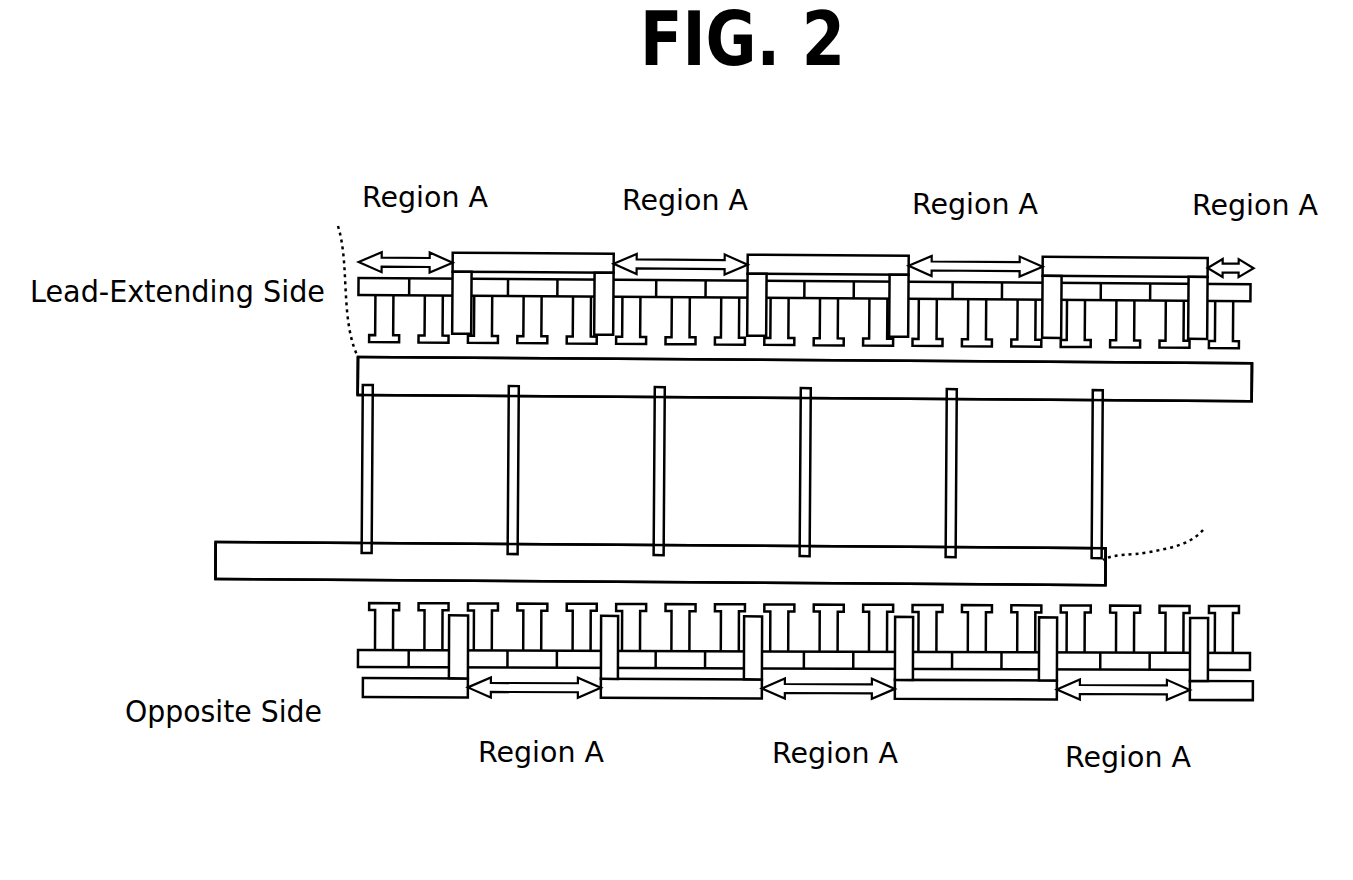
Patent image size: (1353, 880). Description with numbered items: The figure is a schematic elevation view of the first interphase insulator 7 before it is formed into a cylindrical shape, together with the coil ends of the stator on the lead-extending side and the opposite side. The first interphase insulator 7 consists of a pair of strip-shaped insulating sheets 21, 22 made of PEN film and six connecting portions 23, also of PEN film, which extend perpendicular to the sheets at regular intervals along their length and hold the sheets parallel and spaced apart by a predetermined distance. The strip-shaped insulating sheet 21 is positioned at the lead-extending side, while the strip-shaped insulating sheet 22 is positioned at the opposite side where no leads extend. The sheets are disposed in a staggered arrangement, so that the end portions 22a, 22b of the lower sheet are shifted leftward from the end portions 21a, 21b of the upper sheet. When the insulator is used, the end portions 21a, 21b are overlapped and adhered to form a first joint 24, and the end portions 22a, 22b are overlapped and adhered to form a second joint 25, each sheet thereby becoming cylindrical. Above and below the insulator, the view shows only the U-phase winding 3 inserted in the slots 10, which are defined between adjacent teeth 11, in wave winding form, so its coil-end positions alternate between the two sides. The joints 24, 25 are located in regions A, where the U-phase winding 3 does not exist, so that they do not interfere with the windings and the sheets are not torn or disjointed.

The U-phase winding 3 is at (532, 262).
The first interphase insulator 7 is at (1268, 470).
The slot 10 is at (1148, 323).
The tooth 11 is at (1227, 320).
The strip-shaped insulating sheet 21 is at (1170, 380).
The end portion of strip-shaped insulating sheet 21a is at (358, 373).
The end portion of strip-shaped insulating sheet 21b is at (1253, 380).
The strip-shaped insulating sheet 22 is at (328, 557).
The end portion of strip-shaped insulating sheet 22a is at (217, 560).
The end portion of strip-shaped insulating sheet 22b is at (1108, 562).
The connecting portion 23 is at (1098, 490).
The first joint 24 is at (338, 279).
The second joint 25 is at (1162, 532).